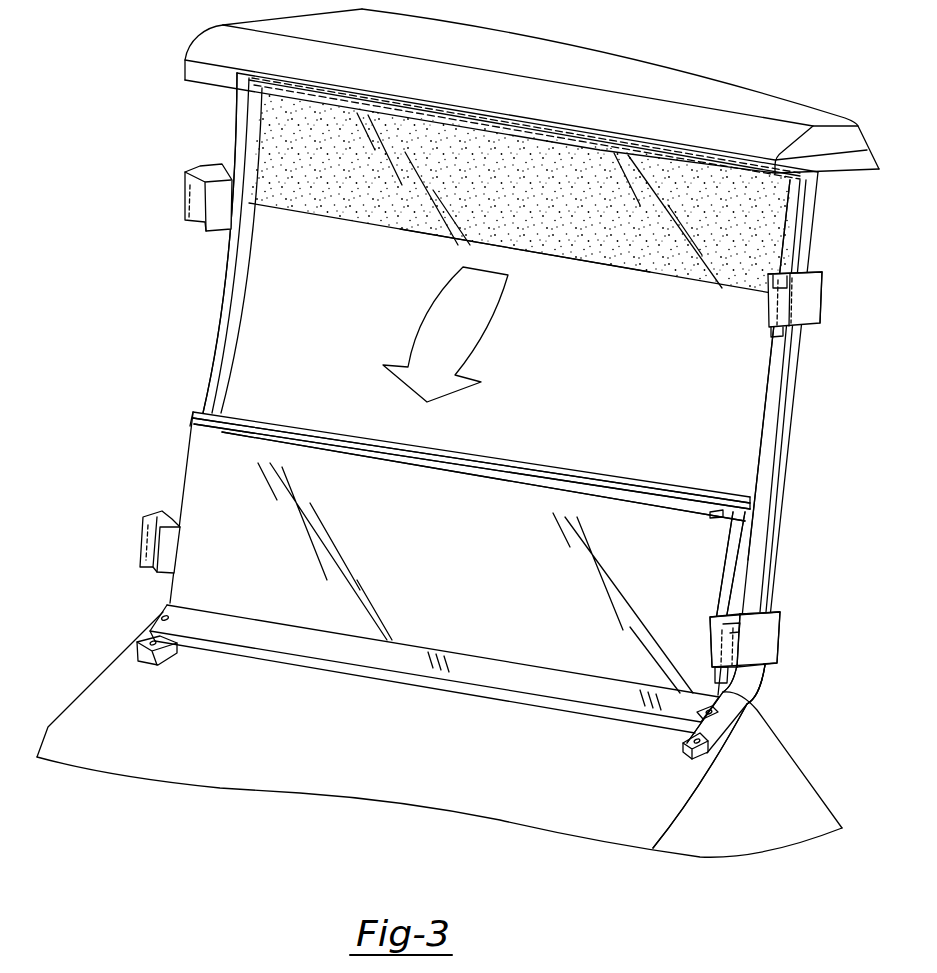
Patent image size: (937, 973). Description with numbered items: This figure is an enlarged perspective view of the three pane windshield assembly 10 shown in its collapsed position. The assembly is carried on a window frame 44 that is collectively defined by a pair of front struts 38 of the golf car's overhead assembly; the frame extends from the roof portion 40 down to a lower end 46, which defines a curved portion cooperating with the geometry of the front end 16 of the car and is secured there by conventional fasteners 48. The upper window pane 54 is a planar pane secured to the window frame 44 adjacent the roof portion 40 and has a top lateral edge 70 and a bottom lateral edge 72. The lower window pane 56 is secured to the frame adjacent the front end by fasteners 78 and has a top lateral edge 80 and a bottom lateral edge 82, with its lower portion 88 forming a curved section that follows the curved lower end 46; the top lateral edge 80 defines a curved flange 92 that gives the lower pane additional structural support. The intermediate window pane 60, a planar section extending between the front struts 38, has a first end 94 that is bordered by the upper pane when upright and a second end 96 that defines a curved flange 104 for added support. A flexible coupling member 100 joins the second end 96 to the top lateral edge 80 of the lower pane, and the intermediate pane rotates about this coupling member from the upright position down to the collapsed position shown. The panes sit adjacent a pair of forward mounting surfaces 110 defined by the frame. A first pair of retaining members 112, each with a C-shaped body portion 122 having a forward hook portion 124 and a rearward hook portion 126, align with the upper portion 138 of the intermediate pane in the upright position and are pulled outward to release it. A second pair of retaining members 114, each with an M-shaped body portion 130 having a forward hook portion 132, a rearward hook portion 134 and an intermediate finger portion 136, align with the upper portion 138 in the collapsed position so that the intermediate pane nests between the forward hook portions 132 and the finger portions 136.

The three pane windshield assembly 10 is at (124, 230).
The front end 16 is at (384, 760).
The front struts 38 is at (226, 313).
The roof portion 40 is at (477, 45).
The window frame 44 is at (229, 262).
The lower end 46 is at (740, 717).
The fasteners 48 is at (690, 737).
The upper window pane 54 is at (536, 194).
The lower window pane 56 is at (753, 545).
The intermediate window pane 60 is at (438, 553).
The top lateral edge 70 is at (318, 80).
The bottom lateral edge 72 is at (553, 258).
The fasteners 78 is at (690, 710).
The top lateral edge 80 is at (733, 492).
The bottom lateral edge 82 is at (393, 660).
The lower portion 88 is at (520, 680).
The curved flange 92 is at (697, 493).
The first end 94 is at (300, 628).
The second end 96 is at (607, 497).
The flexible coupling member 100 is at (495, 482).
The curved flange 104 is at (633, 492).
The forward mounting surfaces 110 is at (217, 357).
The first pair of retaining members 112 is at (214, 178).
The second pair of retaining members 114 is at (162, 540).
The C-shaped body portion 122 is at (805, 308).
The forward hook portion 124 is at (768, 288).
The rearward hook portion 126 is at (812, 272).
The M-shaped body portion 130 is at (760, 648).
The forward hook portion 132 is at (714, 647).
The rearward hook portion 134 is at (775, 612).
The intermediate finger portion 136 is at (740, 604).
The upper portion 138 is at (728, 690).